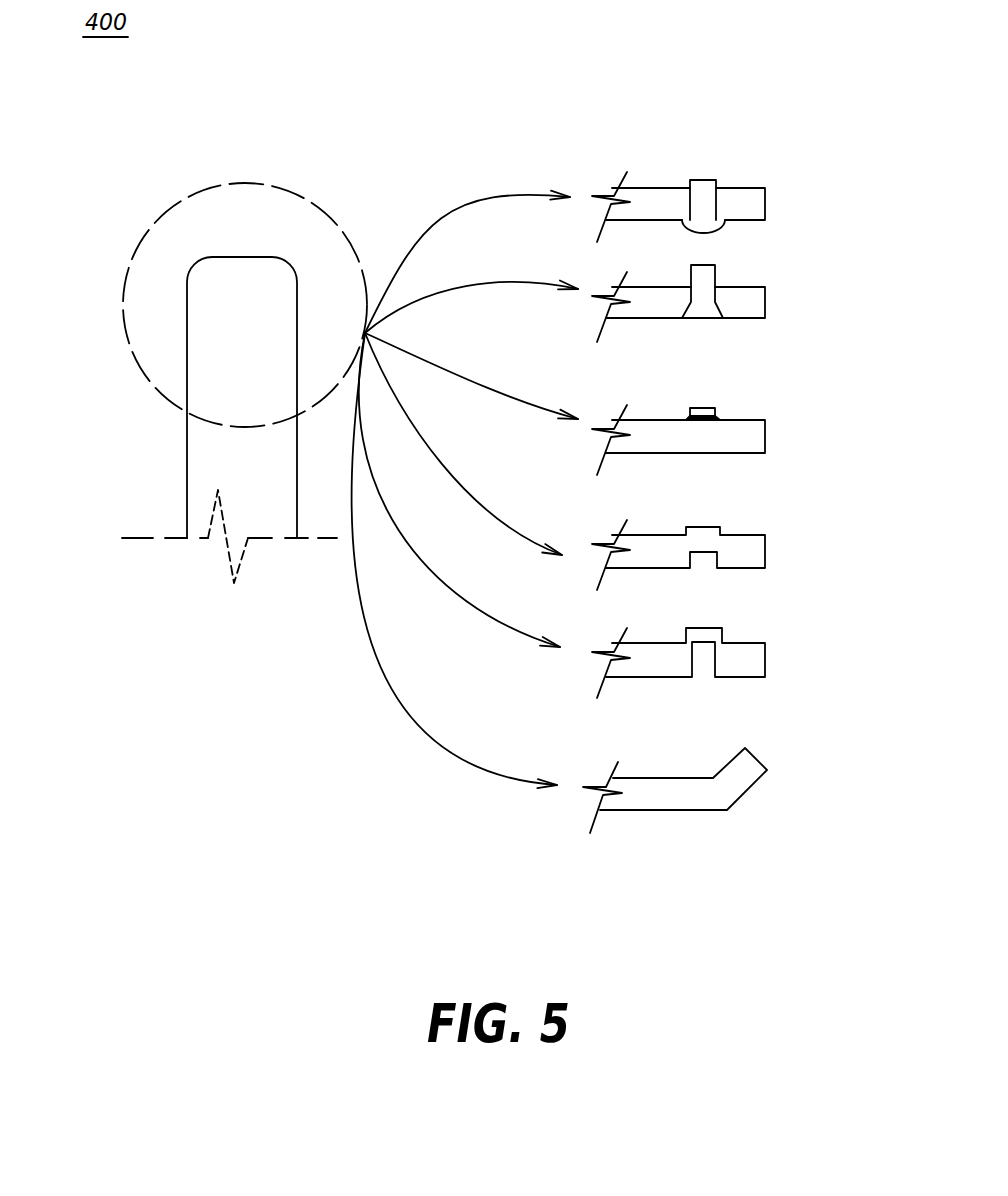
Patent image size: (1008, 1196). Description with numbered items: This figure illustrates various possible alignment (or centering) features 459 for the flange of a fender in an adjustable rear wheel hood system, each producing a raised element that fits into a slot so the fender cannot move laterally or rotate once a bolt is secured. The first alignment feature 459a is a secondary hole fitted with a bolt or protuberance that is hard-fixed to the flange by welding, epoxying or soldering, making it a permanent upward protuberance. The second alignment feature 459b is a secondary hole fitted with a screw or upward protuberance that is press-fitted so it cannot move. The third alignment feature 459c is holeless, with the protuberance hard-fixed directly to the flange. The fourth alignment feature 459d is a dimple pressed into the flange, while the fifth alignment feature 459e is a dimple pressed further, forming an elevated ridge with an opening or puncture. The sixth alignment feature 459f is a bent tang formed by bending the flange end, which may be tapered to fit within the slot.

The alignment (or centering) features 459 is at (183, 202).
The first alignment (or centering) feature 459a is at (707, 172).
The second alignment (or centering) feature 459b is at (710, 258).
The third alignment (or centering) feature 459c is at (708, 397).
The fourth alignment (or centering) feature 459d is at (708, 517).
The fifth alignment (or centering) feature 459e is at (708, 617).
The sixth alignment (or centering) feature 459f is at (768, 750).